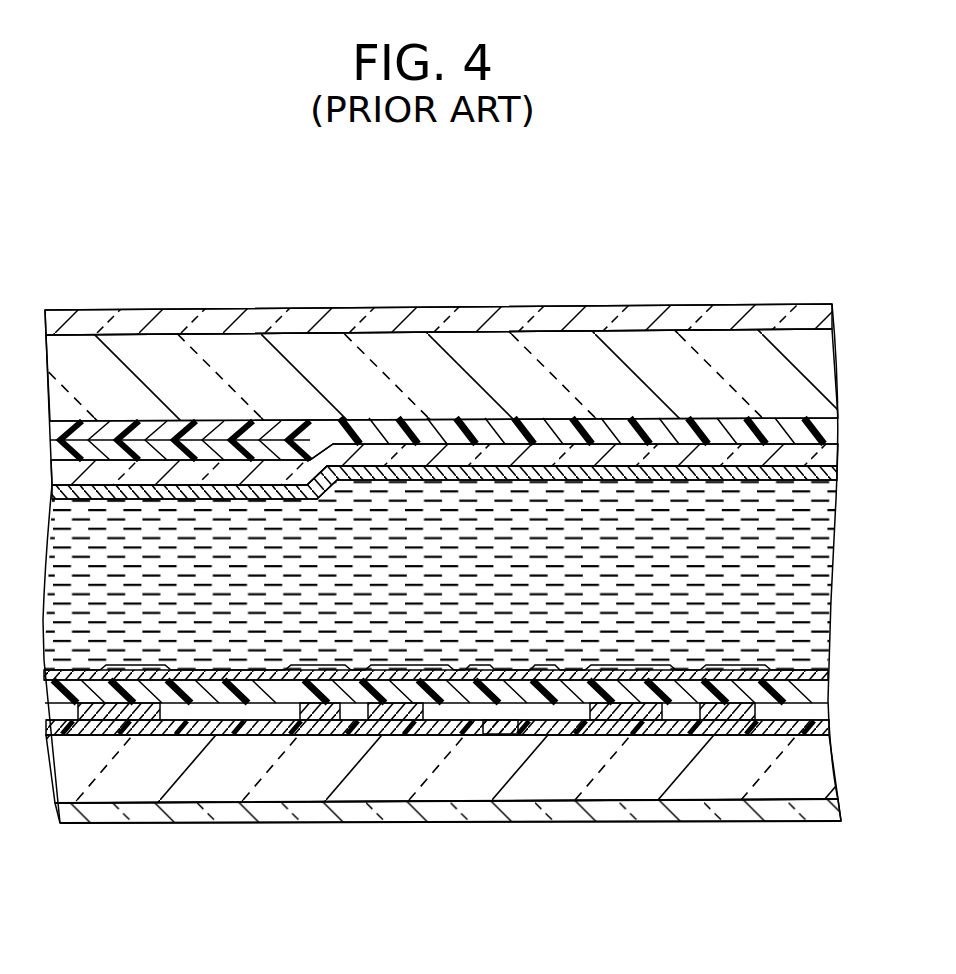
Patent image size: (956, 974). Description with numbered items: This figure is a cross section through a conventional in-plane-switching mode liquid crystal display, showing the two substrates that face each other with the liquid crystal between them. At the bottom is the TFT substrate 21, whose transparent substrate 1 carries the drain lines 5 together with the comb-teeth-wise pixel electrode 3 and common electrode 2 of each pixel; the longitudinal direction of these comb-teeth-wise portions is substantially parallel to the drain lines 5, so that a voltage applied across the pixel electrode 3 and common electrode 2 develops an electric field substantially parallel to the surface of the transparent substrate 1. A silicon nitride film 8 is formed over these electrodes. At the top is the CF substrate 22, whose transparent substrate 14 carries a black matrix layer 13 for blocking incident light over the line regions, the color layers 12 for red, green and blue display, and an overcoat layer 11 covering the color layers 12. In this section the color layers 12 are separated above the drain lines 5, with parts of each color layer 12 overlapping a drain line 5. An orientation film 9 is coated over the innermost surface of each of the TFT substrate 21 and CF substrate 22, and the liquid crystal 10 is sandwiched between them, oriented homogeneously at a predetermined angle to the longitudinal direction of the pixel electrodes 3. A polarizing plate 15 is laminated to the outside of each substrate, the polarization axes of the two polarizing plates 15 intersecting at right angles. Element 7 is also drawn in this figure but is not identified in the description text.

The transparent substrate 1 is at (736, 786).
The common electrode 2 is at (512, 722).
The pixel electrode 3 is at (618, 737).
The drain line 5 is at (128, 717).
The pixel electrode 7 is at (682, 720).
The silicon nitride film 8 is at (438, 716).
The orientation film 9 is at (743, 465).
The liquid crystal 10 is at (647, 492).
The overcoat layer 11 is at (540, 457).
The color layer 12 is at (475, 428).
The black matrix layer 13 is at (210, 428).
The transparent substrate 14 is at (377, 350).
The polarizing plate 15 is at (102, 308).
The TFT substrate 21 is at (466, 795).
The CF substrate 22 is at (442, 553).